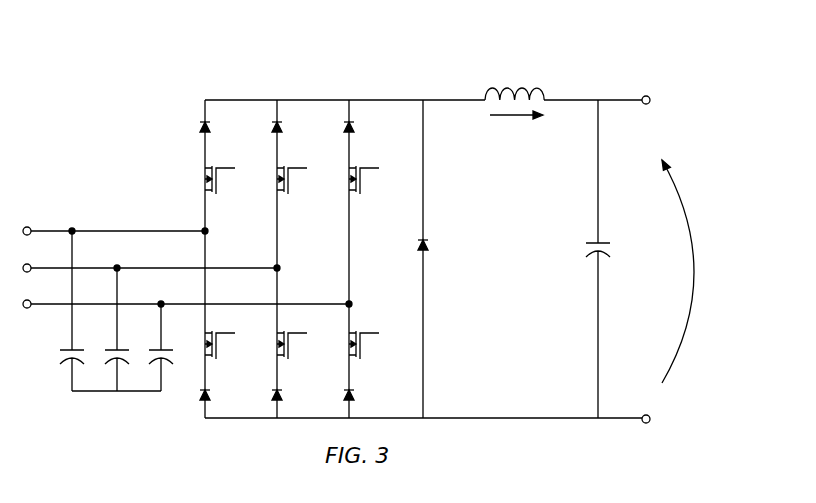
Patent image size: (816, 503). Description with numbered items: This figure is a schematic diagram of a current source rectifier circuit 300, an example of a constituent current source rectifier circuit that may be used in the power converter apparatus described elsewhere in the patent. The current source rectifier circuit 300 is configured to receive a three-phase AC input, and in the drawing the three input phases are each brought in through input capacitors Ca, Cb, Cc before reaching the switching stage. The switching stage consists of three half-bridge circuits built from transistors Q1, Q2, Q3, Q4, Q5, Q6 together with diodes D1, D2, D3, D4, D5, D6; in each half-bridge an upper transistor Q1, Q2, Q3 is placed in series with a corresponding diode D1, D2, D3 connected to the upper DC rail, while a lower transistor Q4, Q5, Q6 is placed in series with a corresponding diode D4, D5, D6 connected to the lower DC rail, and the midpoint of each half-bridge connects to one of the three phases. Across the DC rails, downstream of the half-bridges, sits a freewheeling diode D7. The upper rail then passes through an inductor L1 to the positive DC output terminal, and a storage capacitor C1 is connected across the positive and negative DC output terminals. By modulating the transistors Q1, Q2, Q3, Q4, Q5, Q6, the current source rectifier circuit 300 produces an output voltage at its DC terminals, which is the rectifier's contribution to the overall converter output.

The current source rectifier circuit 300 is at (560, 44).
The diode D1 is at (216, 128).
The diode D2 is at (288, 128).
The diode D3 is at (360, 128).
The diode D4 is at (216, 396).
The diode D5 is at (288, 396).
The diode D6 is at (360, 396).
The freewheeling diode D7 is at (434, 246).
The transistor Q1 is at (224, 182).
The transistor Q2 is at (296, 182).
The transistor Q3 is at (368, 182).
The transistor Q4 is at (224, 346).
The transistor Q5 is at (296, 346).
The transistor Q6 is at (368, 346).
The input capacitor Ca is at (71, 311).
The input capacitor Cb is at (116, 329).
The input capacitor Cc is at (160, 347).
The inductor L1 is at (514, 83).
The storage capacitor C1 is at (608, 259).